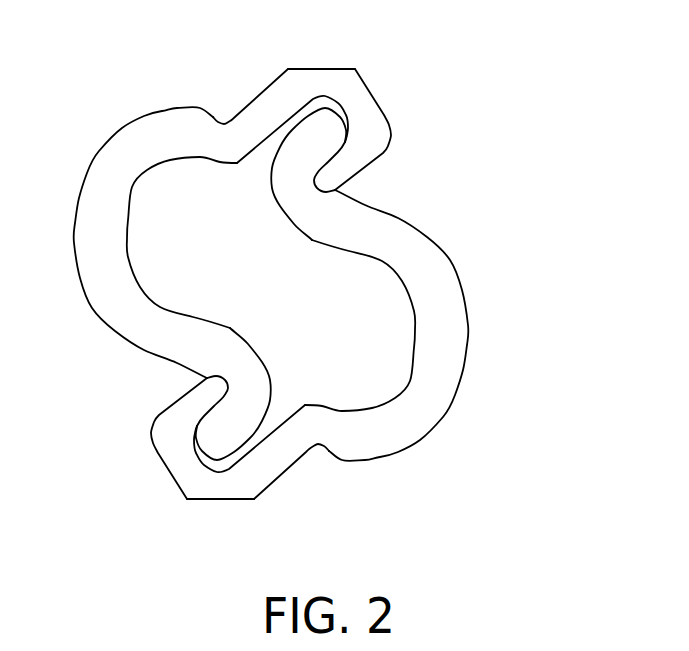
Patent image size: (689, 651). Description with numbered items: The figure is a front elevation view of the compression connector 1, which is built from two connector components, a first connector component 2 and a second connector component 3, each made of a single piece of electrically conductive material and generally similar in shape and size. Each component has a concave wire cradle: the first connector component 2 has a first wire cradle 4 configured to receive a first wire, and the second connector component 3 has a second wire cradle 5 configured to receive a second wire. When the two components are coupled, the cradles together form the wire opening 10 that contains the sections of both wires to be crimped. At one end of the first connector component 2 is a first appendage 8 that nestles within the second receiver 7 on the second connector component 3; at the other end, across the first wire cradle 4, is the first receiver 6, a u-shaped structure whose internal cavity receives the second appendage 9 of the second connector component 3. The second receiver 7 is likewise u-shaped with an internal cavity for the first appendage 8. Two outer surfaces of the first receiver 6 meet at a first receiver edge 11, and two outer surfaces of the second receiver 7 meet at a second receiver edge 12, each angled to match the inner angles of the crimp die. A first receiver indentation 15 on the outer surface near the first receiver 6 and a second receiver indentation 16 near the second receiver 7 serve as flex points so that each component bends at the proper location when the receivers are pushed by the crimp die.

The compression connector 1 is at (525, 37).
The first connector component 2 is at (92, 183).
The second connector component 3 is at (445, 388).
The first wire cradle 4 is at (128, 242).
The second wire cradle 5 is at (414, 353).
The first receiver 6 is at (375, 122).
The second receiver 7 is at (175, 437).
The first appendage 8 is at (224, 431).
The second appendage 9 is at (318, 138).
The wire opening 10 is at (272, 285).
The first receiver edge 11 is at (356, 68).
The second receiver edge 12 is at (190, 499).
The first receiver indentation 15 is at (232, 119).
The second receiver indentation 16 is at (313, 449).